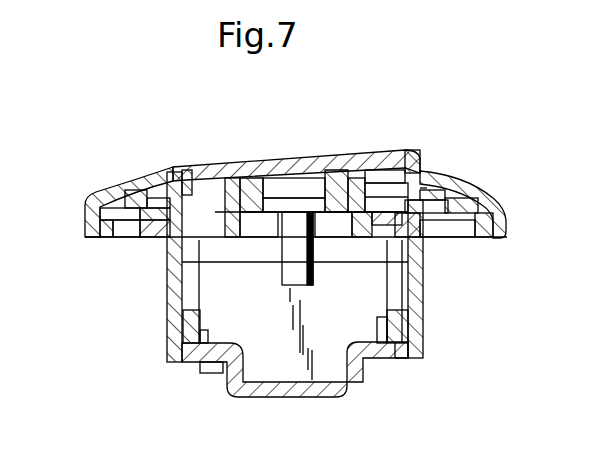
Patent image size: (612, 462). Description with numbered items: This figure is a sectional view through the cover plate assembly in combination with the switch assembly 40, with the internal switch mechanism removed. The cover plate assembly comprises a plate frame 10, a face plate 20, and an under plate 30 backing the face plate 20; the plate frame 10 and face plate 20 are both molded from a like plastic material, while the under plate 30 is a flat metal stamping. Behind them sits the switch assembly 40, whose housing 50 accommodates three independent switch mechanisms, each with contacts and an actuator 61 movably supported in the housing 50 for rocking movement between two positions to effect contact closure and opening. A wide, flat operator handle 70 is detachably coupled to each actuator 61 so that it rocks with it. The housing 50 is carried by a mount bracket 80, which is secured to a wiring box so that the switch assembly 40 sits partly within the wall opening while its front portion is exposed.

The plate frame 10 is at (97, 237).
The face plate 20 is at (110, 190).
The under plate 30 is at (160, 173).
The switch assembly 40 is at (428, 360).
The housing 50 is at (167, 320).
The actuator 61 is at (347, 153).
The operator handle 70 is at (226, 163).
The mount bracket 80 is at (150, 242).